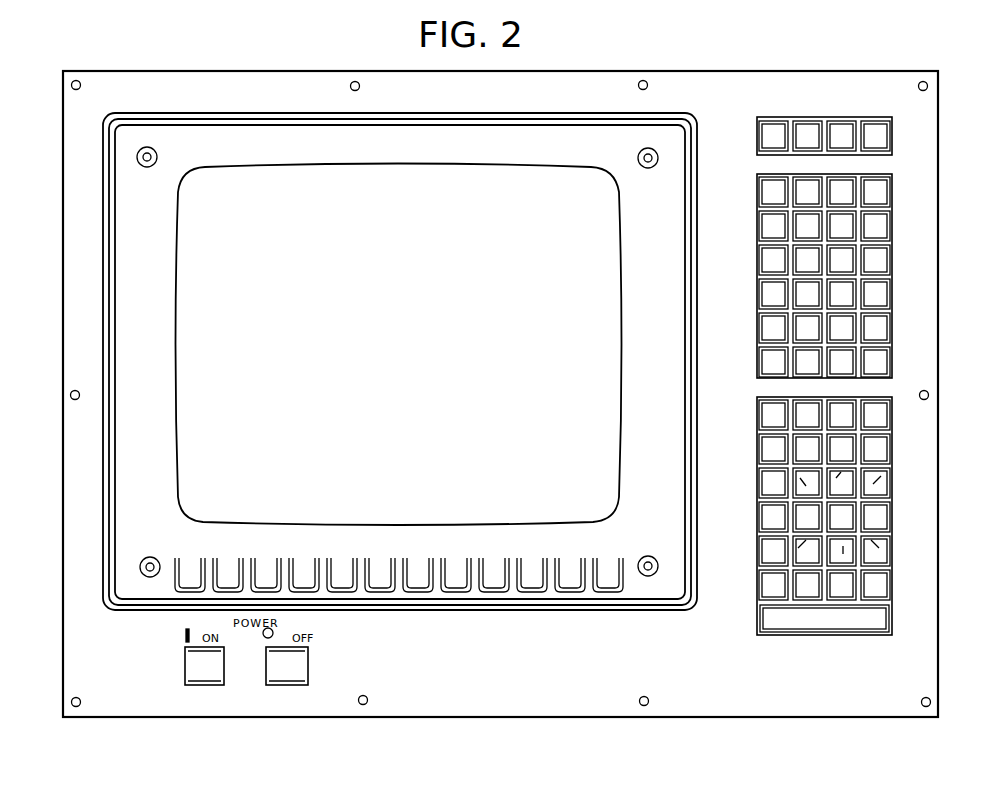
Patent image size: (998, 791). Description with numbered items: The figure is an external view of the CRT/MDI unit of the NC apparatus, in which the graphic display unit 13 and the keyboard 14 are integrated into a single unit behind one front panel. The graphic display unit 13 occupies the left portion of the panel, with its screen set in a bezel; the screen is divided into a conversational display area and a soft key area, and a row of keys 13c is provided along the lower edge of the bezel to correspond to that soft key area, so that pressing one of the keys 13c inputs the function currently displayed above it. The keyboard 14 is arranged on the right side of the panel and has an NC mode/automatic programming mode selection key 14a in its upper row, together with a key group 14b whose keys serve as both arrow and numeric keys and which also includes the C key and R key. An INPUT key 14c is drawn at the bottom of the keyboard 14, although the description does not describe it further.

The graphic display unit 13 is at (192, 489).
The keys 13c is at (190, 580).
The keyboard 14 is at (875, 332).
The NC mode/automatic programming mode selection key 14a is at (834, 120).
The key group 14b is at (903, 512).
The INPUT key 14c is at (878, 618).